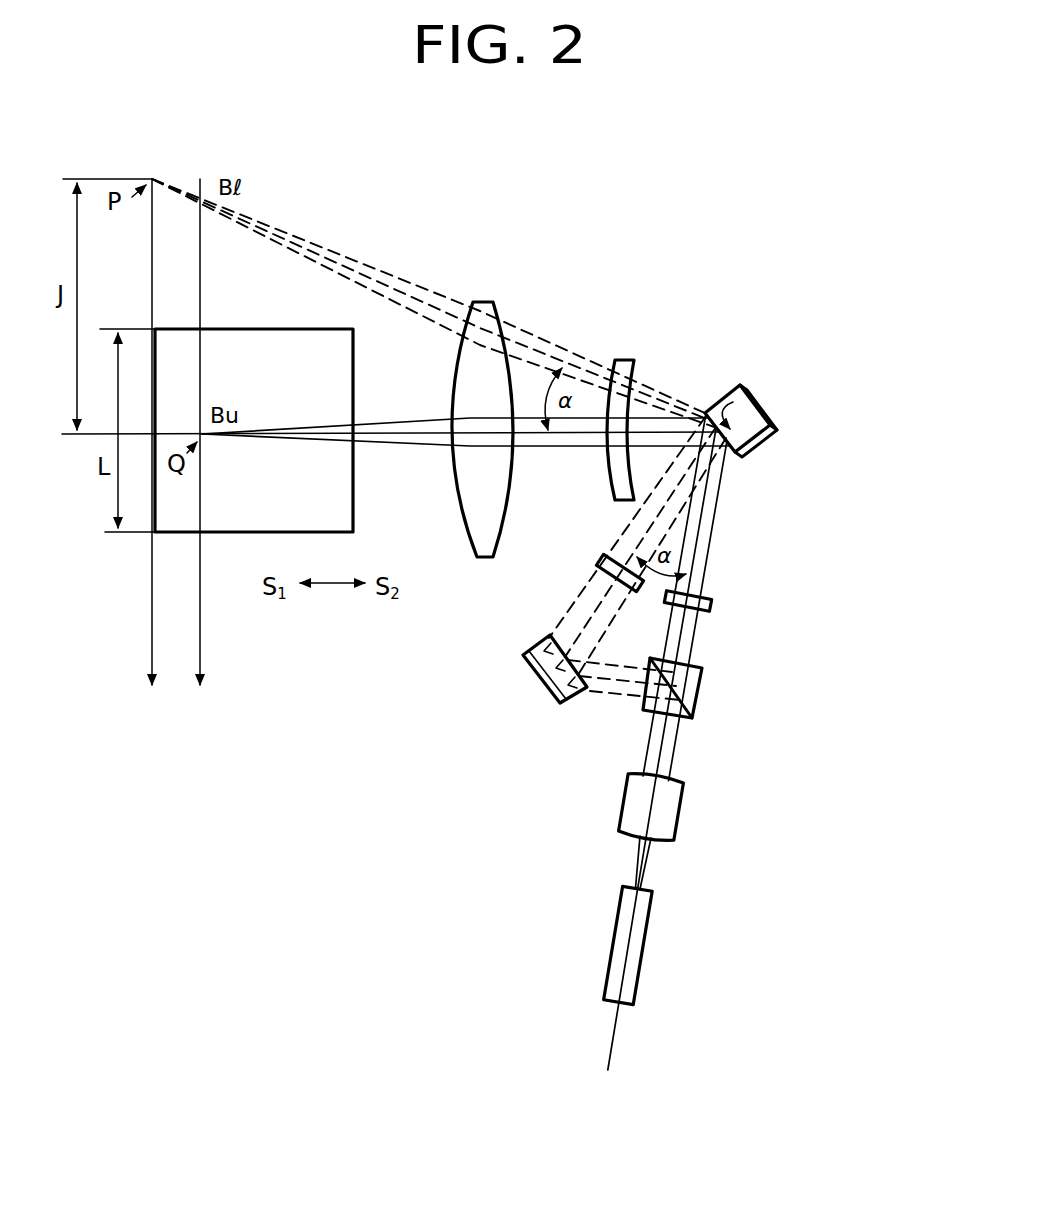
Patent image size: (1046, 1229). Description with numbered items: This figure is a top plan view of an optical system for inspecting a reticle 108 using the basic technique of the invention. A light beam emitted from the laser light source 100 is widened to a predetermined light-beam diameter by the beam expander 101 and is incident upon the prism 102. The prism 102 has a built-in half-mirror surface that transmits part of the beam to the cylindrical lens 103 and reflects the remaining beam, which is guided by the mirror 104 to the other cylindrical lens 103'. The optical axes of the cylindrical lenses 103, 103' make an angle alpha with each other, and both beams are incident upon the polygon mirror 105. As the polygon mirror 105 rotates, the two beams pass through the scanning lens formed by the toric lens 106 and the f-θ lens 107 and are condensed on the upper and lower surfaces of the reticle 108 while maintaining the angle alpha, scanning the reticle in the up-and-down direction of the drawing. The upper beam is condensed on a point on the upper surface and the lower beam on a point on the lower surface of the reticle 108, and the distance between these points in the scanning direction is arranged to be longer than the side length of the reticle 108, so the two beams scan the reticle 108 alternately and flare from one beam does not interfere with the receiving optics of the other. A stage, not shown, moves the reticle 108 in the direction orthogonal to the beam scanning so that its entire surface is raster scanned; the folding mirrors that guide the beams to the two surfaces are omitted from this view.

The laser light source 100 is at (638, 938).
The beam expander 101 is at (672, 818).
The prism 102 is at (643, 708).
The cylindrical lens 103 is at (775, 659).
The cylindrical lens 103' is at (600, 545).
The mirror 104 is at (537, 681).
The polygon mirror 105 is at (752, 434).
The toric lens 106 is at (620, 358).
The f-θ lens 107 is at (493, 302).
The reticle 108 is at (350, 502).